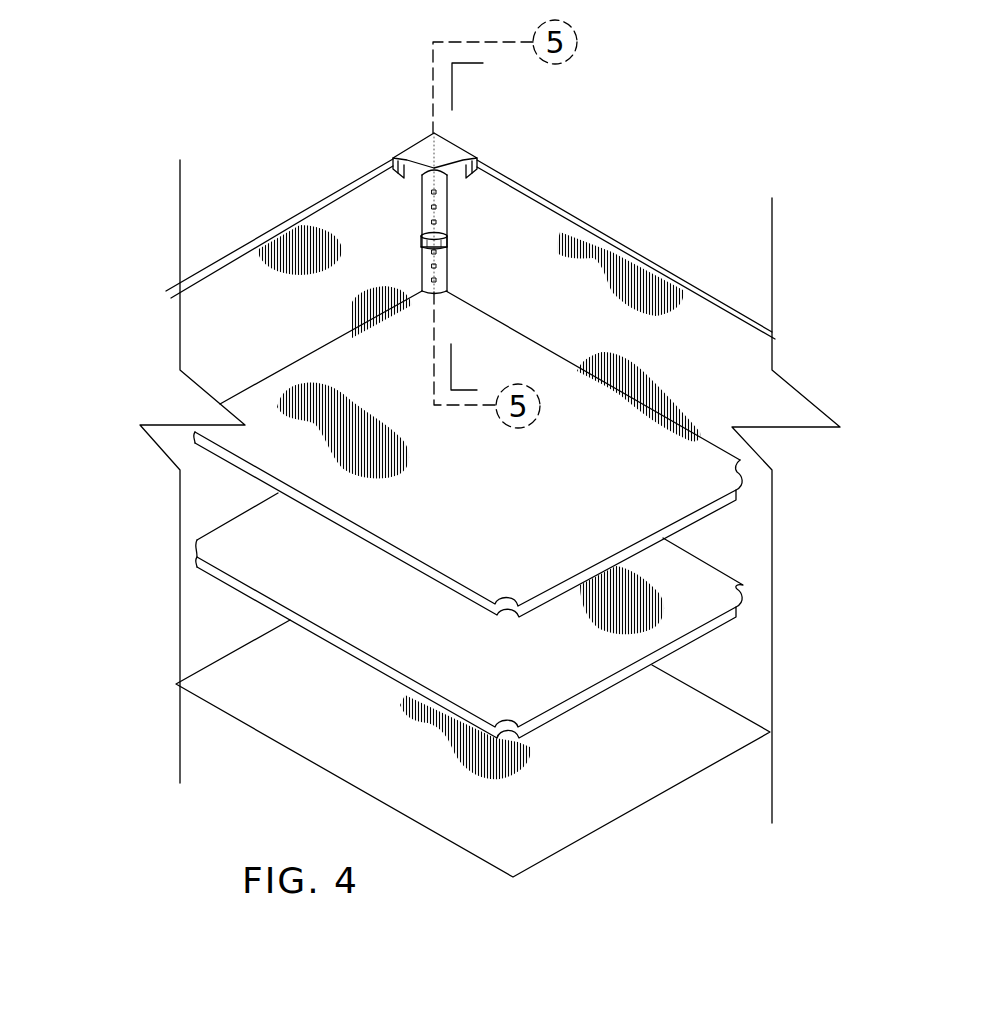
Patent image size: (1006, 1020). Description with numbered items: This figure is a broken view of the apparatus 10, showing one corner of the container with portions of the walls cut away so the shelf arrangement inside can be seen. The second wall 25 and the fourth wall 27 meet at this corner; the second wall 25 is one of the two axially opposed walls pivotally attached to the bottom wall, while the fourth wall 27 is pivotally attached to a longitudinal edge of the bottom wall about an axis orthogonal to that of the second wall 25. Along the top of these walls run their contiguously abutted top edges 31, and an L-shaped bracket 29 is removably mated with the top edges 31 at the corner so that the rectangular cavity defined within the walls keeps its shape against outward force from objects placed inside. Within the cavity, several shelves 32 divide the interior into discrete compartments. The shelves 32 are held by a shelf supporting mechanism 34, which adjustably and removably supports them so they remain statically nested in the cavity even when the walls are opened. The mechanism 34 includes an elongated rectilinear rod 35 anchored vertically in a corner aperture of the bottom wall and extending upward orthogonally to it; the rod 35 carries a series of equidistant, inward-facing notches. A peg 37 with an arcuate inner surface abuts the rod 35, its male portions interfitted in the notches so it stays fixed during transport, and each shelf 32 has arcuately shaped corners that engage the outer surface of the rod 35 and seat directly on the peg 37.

The apparatus 10 is at (952, 150).
The second wall 25 is at (313, 243).
The fourth wall 27 is at (642, 285).
The L-shaped bracket 29 is at (456, 158).
The top edge 31 is at (240, 253).
The shelf 32 is at (717, 470).
The shelf supporting mechanism 34 is at (490, 246).
The rod 35 is at (443, 216).
The peg 37 is at (422, 232).